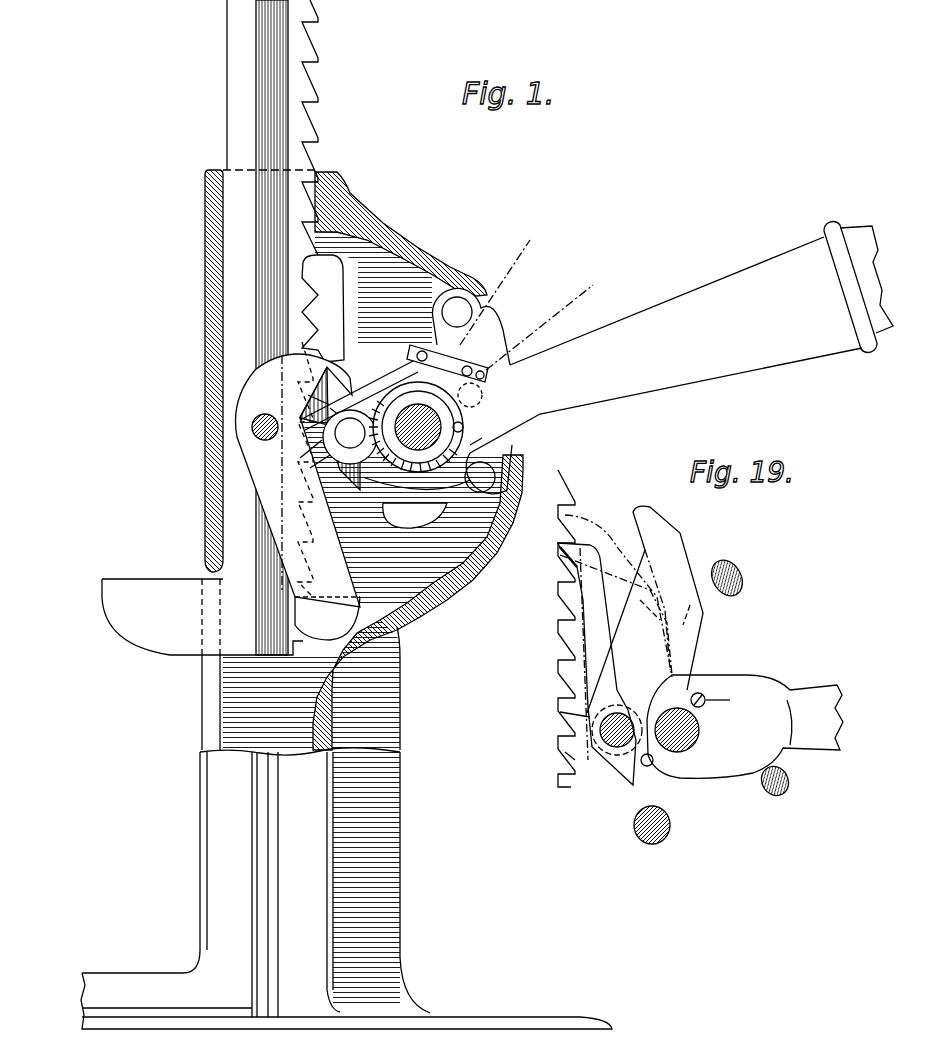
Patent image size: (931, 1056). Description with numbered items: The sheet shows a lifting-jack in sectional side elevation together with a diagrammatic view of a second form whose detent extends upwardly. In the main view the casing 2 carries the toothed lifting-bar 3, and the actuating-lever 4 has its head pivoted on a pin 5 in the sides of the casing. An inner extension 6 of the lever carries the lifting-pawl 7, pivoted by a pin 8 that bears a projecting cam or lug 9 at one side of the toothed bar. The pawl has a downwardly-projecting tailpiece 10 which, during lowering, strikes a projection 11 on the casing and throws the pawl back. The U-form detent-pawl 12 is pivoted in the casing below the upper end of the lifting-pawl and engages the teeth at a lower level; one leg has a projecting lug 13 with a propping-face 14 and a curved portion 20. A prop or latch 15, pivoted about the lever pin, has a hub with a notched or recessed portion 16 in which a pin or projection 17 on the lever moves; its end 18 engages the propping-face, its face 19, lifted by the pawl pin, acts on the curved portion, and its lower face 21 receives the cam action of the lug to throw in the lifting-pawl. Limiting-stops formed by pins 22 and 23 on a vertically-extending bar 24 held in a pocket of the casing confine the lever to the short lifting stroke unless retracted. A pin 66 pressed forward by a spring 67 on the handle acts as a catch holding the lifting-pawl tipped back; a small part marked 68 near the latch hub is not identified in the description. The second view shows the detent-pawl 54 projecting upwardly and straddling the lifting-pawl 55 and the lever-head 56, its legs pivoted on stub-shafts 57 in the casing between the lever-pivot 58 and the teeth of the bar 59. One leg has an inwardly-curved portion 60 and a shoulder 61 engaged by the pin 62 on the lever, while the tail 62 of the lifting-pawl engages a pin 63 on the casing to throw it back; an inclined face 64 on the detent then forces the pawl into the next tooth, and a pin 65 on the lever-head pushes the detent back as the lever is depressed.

In FIG. 1, the casing 2 is at (380, 700).
In FIG. 1, the lifting-bar 3 is at (287, 327).
In FIG. 1, the actuating-lever 4 is at (662, 358).
In FIG. 1, the pin 5 is at (417, 491).
In FIG. 1, the inner extension 6 is at (416, 428).
In FIG. 1, the lifting-pawl 7 is at (323, 308).
In FIG. 1, the pin 8 is at (350, 437).
In FIG. 1, the cam or lug 9 is at (311, 469).
In FIG. 1, the tailpiece 10 is at (352, 490).
In FIG. 1, the projection 11 is at (415, 519).
In FIG. 1, the detent-pawl 12 is at (327, 618).
In FIG. 1, the projecting lug 13 is at (297, 480).
In FIG. 1, the propping-face 14 is at (359, 395).
In FIG. 1, the prop or latch 15 is at (395, 420).
In FIG. 1, the notched or recessed portion 16 is at (463, 427).
In FIG. 1, the pin or projection 17 is at (487, 435).
In FIG. 1, the end of prop 18 is at (270, 419).
In FIG. 1, the face of prop 19 is at (340, 405).
In FIG. 1, the curved portion 20 is at (307, 392).
In FIG. 1, the lower face of prop 21 is at (295, 456).
In FIG. 1, the pin 22 is at (472, 313).
In FIG. 1, the pin 23 is at (495, 477).
In FIG. 1, the vertically-extending bar 24 is at (526, 305).
In FIG. 1, the pin 66 is at (410, 350).
In FIG. 1, the spring 67 is at (467, 366).
In FIG. 1, the opening 68 is at (470, 395).
In FIG. 19, the detent-pawl 54 is at (645, 520).
In FIG. 19, the lifting-pawl 55 is at (590, 630).
In FIG. 19, the lever-head 56 is at (559, 714).
In FIG. 19, the stub-shafts 57 is at (605, 745).
In FIG. 19, the lever-pivot 58 is at (700, 745).
In FIG. 19, the bar 59 is at (553, 750).
In FIG. 19, the inwardly-curved portion 60 is at (695, 720).
In FIG. 19, the shoulder 61 is at (704, 697).
In FIG. 19, the pin 62 is at (733, 699).
In FIG. 19, the pin 63 is at (660, 810).
In FIG. 19, the inclined face 64 is at (661, 616).
In FIG. 19, the pin 65 is at (650, 766).